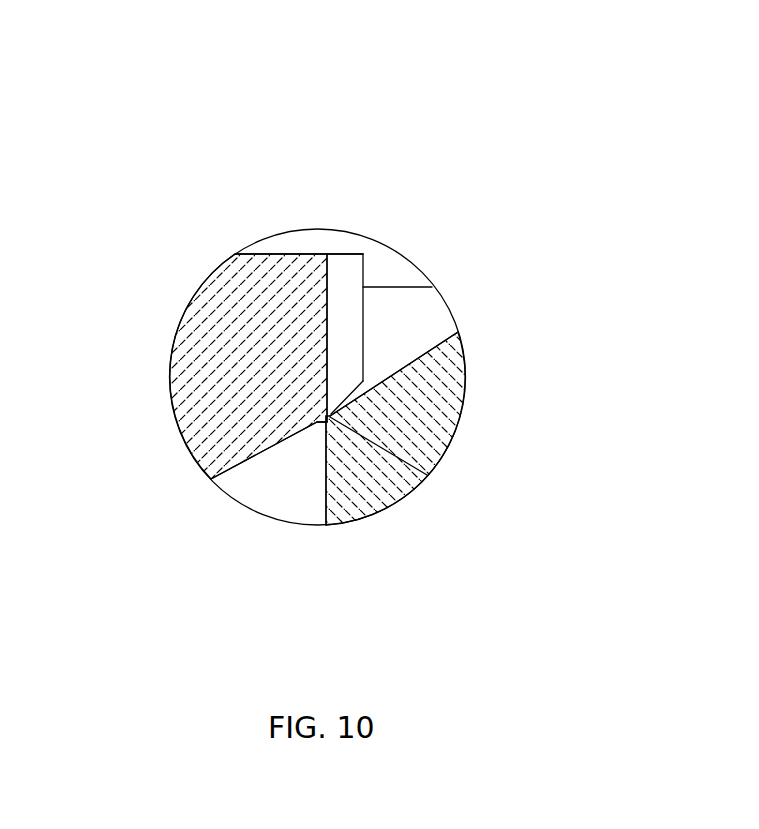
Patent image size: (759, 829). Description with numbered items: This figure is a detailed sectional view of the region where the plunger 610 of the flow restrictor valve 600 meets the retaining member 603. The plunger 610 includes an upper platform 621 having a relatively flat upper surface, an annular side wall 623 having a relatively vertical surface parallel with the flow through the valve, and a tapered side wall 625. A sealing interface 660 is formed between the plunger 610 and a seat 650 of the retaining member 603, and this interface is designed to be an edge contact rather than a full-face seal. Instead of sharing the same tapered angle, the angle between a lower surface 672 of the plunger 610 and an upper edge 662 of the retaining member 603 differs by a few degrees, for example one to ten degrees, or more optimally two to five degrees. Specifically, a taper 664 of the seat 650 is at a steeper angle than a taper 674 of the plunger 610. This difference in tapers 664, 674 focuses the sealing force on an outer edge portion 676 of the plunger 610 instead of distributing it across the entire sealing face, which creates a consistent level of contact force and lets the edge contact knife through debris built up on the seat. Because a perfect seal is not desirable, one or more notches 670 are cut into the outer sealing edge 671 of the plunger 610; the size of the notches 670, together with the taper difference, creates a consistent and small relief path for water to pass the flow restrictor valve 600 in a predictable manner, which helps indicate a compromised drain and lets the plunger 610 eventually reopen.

The flow restrictor valve 600 is at (388, 333).
The retaining member 603 is at (373, 484).
The plunger 610 is at (214, 319).
The upper platform 621 is at (284, 250).
The annular side wall 623 is at (373, 332).
The tapered side wall 625 is at (221, 492).
The seat 650 is at (514, 479).
The sealing interface 660 is at (442, 525).
The upper edge 662 is at (359, 399).
The taper 664 is at (328, 427).
The notch 670 is at (374, 282).
The outer edge 671 is at (349, 281).
The lower surface 672 is at (327, 397).
The taper 674 is at (297, 410).
The outer edge portion 676 is at (373, 378).